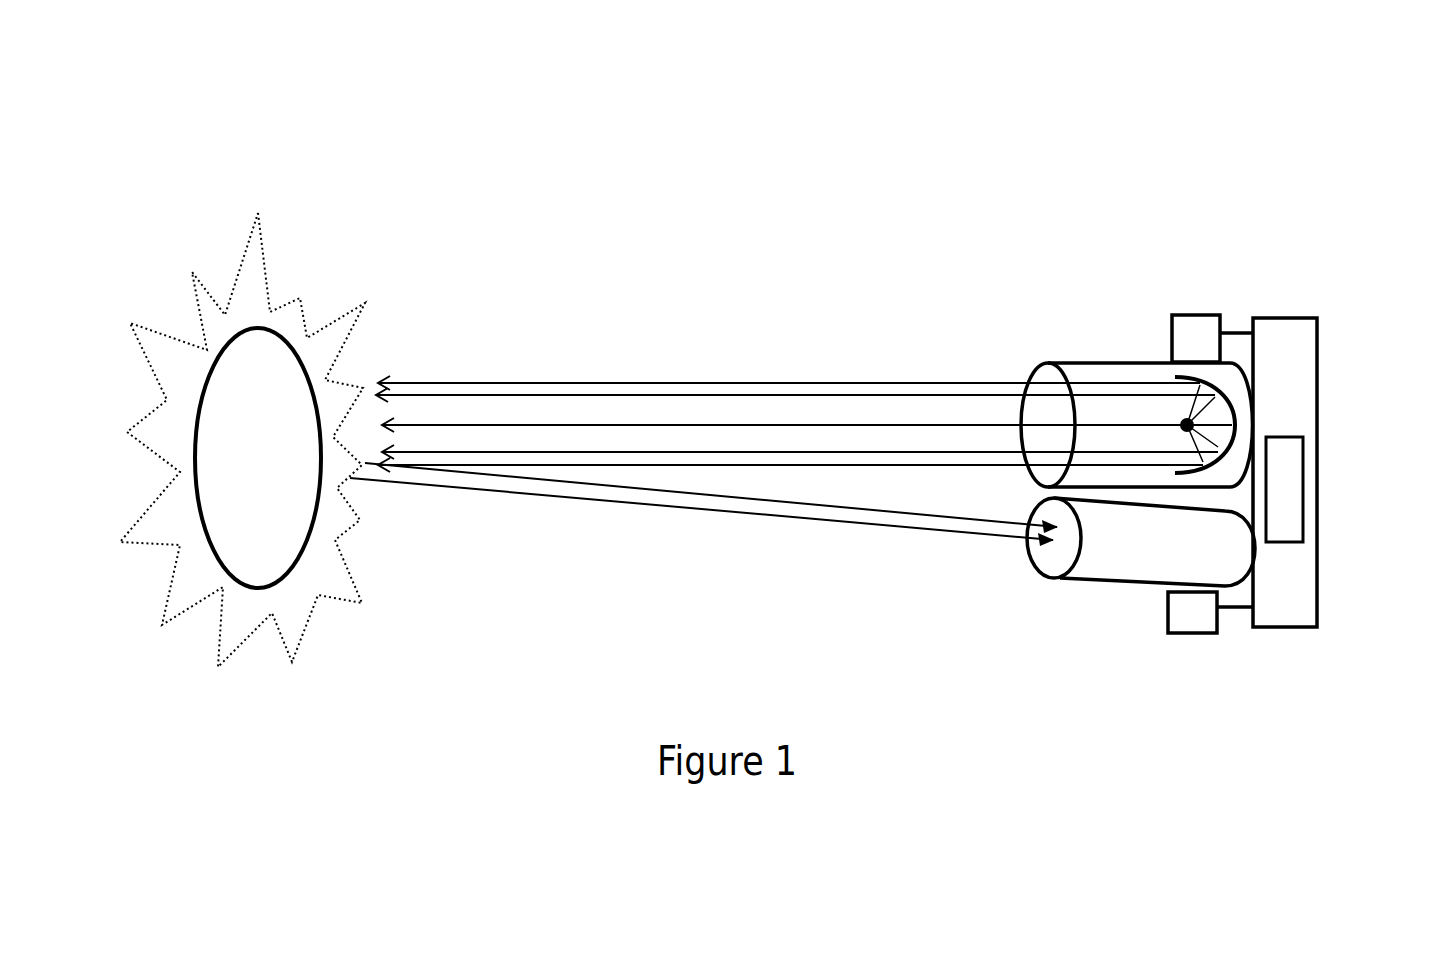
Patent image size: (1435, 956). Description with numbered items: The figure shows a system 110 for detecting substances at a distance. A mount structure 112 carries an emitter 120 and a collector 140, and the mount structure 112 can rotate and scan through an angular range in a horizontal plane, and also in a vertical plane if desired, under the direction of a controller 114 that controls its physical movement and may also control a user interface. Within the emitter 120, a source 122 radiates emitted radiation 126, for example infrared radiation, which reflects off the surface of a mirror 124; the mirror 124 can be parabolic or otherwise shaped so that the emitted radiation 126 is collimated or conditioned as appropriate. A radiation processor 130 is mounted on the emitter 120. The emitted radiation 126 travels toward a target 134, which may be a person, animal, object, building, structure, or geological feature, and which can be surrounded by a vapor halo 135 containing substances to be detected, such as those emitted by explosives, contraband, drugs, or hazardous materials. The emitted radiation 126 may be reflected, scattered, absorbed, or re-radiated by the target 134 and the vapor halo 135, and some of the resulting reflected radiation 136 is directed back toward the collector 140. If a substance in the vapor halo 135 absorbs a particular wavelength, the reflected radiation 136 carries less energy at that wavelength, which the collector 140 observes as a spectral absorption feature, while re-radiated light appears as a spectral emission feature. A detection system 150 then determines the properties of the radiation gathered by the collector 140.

The system 110 is at (1113, 170).
The mount structure 112 is at (1318, 340).
The controller 114 is at (1303, 488).
The emitter 120 is at (1080, 363).
The source 122 is at (1185, 423).
The mirror 124 is at (1233, 397).
The emitted radiation 126 is at (690, 423).
The radiation processor 130 is at (1197, 313).
The target 134 is at (273, 327).
The vapor halo 135 is at (131, 322).
The reflected radiation 136 is at (665, 505).
The collector 140 is at (1093, 585).
The detection system 150 is at (1203, 635).